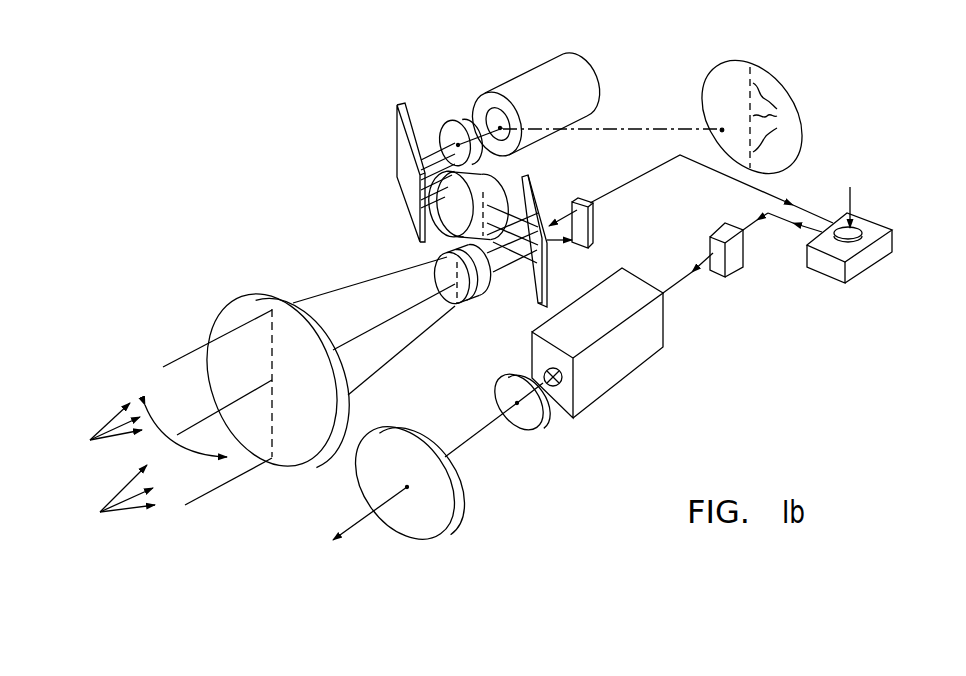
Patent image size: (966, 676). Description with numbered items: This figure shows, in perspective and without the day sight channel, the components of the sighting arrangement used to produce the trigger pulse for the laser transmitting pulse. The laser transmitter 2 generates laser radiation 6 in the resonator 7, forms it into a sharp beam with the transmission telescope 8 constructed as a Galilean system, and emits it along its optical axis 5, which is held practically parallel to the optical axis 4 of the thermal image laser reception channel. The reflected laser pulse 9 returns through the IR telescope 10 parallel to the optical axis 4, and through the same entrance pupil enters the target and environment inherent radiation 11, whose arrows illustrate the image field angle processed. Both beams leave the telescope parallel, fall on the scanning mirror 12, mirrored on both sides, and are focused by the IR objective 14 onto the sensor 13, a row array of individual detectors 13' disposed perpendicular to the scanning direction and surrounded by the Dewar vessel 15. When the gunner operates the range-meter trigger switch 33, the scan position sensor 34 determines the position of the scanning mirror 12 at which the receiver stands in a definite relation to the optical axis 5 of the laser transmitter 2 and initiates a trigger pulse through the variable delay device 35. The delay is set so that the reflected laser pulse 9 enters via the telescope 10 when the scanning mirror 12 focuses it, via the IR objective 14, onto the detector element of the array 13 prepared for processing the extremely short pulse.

The laser transmitter 2 is at (717, 343).
The optical axis of the reception channel 4 is at (393, 317).
The optical axis of the laser transmitter 5 is at (479, 435).
The laser radiation 6 is at (362, 533).
The resonator 7 is at (633, 360).
The transmission telescope 8 is at (530, 415).
The reflected laser radiation 9 is at (190, 423).
The IR telescope 10 is at (288, 330).
The target and environment inherent radiation 11 is at (142, 507).
The scanning mirror 12 is at (537, 208).
The sensor 13 is at (774, 117).
The individual detector 13' is at (752, 113).
The IR objective 14 is at (457, 138).
The Dewar vessel 15 is at (540, 75).
The range-meter trigger switch 33 is at (857, 270).
The scan position sensor 34 is at (587, 203).
The variable delay device 35 is at (733, 265).